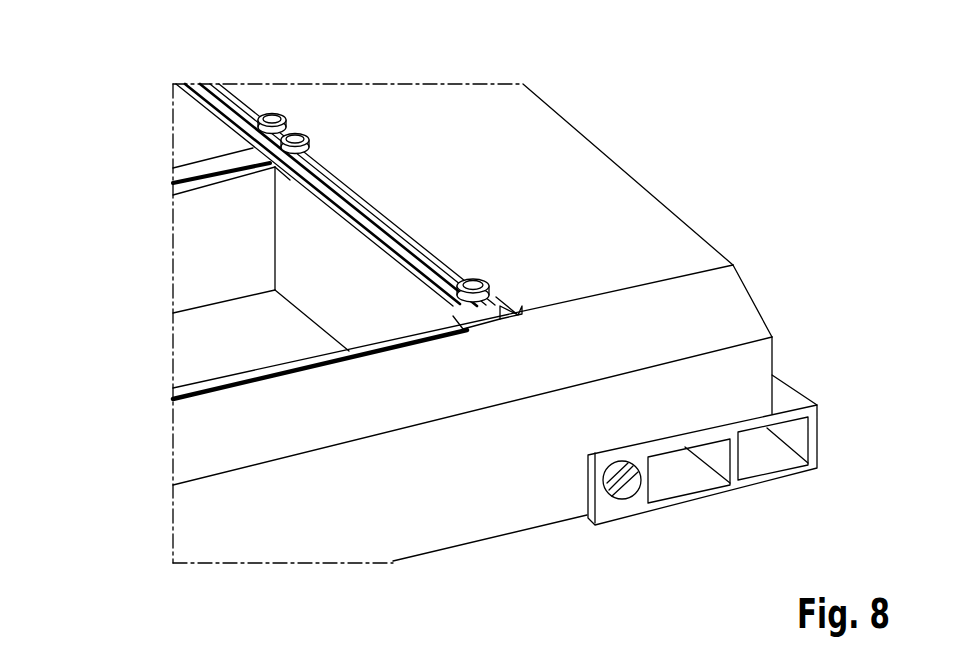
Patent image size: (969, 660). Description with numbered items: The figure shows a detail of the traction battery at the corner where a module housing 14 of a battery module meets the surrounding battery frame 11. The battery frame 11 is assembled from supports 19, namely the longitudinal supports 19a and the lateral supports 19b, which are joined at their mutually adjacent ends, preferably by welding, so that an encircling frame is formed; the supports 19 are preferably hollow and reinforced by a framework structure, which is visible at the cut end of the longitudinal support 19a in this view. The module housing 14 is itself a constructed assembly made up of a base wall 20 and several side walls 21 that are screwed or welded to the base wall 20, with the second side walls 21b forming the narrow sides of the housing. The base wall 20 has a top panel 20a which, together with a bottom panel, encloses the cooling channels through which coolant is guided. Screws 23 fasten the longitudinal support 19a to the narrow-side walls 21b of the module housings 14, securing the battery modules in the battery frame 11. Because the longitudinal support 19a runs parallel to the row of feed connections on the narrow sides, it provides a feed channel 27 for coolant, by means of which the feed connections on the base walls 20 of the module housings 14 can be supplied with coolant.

The battery frame 11 is at (598, 128).
The module housing 14 is at (253, 85).
The support 19 is at (472, 411).
The longitudinal support 19a is at (667, 228).
The lateral support 19b is at (502, 516).
The base wall 20 is at (224, 301).
The top panel 20a is at (213, 338).
The side wall 21 is at (300, 232).
The second side wall 21b is at (282, 173).
The screw 23 is at (283, 156).
The feed channel 27 is at (625, 472).